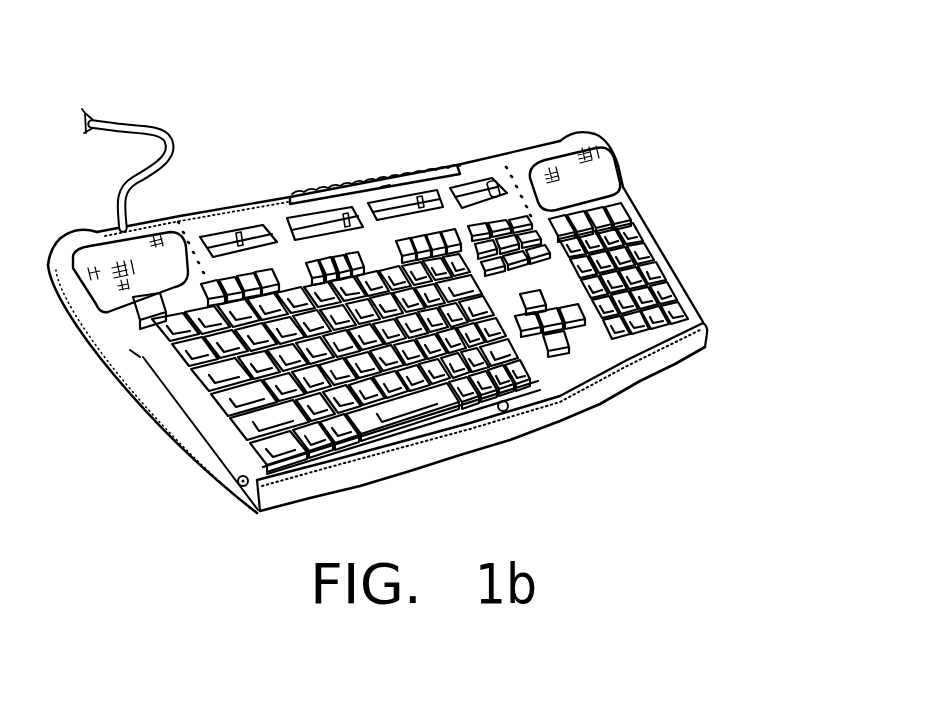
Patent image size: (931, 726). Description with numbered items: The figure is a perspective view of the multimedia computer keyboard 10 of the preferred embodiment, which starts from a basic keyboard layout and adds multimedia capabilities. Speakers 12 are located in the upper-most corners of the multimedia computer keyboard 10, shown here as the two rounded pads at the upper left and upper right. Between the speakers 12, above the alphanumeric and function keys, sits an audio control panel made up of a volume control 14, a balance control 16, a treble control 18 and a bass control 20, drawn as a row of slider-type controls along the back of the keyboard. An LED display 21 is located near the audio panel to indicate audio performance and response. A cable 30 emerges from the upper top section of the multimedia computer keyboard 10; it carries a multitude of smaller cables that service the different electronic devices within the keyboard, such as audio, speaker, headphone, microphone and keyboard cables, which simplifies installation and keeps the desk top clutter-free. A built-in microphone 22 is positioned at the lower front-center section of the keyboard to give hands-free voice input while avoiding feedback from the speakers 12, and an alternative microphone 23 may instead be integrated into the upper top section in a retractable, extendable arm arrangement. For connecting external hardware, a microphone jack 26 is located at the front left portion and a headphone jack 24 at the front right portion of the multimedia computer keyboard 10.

The multimedia computer keyboard 10 is at (611, 104).
The speakers 12 is at (616, 178).
The volume control 14 is at (209, 236).
The balance control 16 is at (288, 218).
The treble control 18 is at (405, 203).
The bass control 20 is at (470, 178).
The LED display 21 is at (504, 160).
The built-in microphone 22 is at (512, 410).
The microphone 23 is at (440, 162).
The headphone jack 24 is at (707, 320).
The microphone jack 26 is at (236, 487).
The cable 30 is at (136, 124).